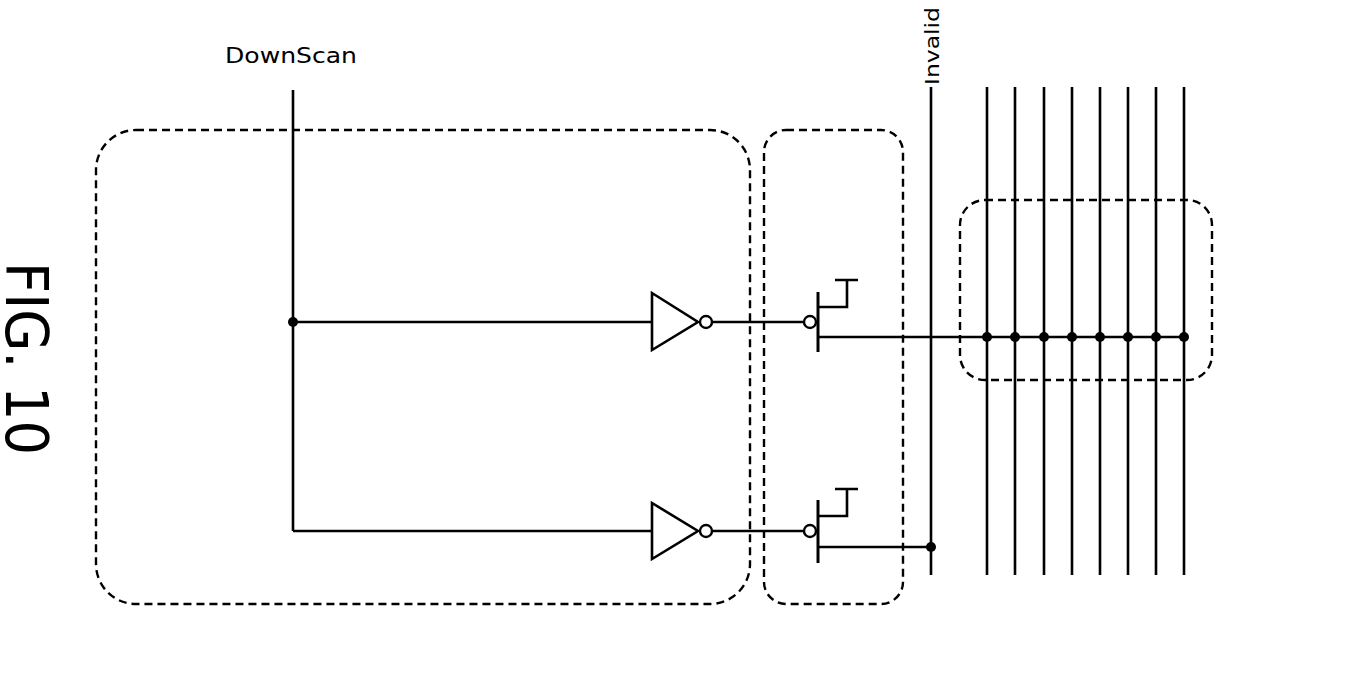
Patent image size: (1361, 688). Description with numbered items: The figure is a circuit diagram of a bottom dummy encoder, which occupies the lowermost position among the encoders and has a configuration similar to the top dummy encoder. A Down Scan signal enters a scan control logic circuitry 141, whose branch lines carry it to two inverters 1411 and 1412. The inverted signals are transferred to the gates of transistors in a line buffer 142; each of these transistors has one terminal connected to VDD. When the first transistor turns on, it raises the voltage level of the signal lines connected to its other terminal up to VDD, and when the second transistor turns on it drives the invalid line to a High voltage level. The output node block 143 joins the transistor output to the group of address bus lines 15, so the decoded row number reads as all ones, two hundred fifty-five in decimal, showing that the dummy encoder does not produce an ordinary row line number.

The scan control logic circuitry 141 is at (514, 128).
The inverter 1411 is at (666, 293).
The inverter 1412 is at (668, 503).
The line buffer 142 is at (833, 128).
The output node connection block 143 is at (1212, 285).
The address lines A0-A7 15 is at (1184, 591).